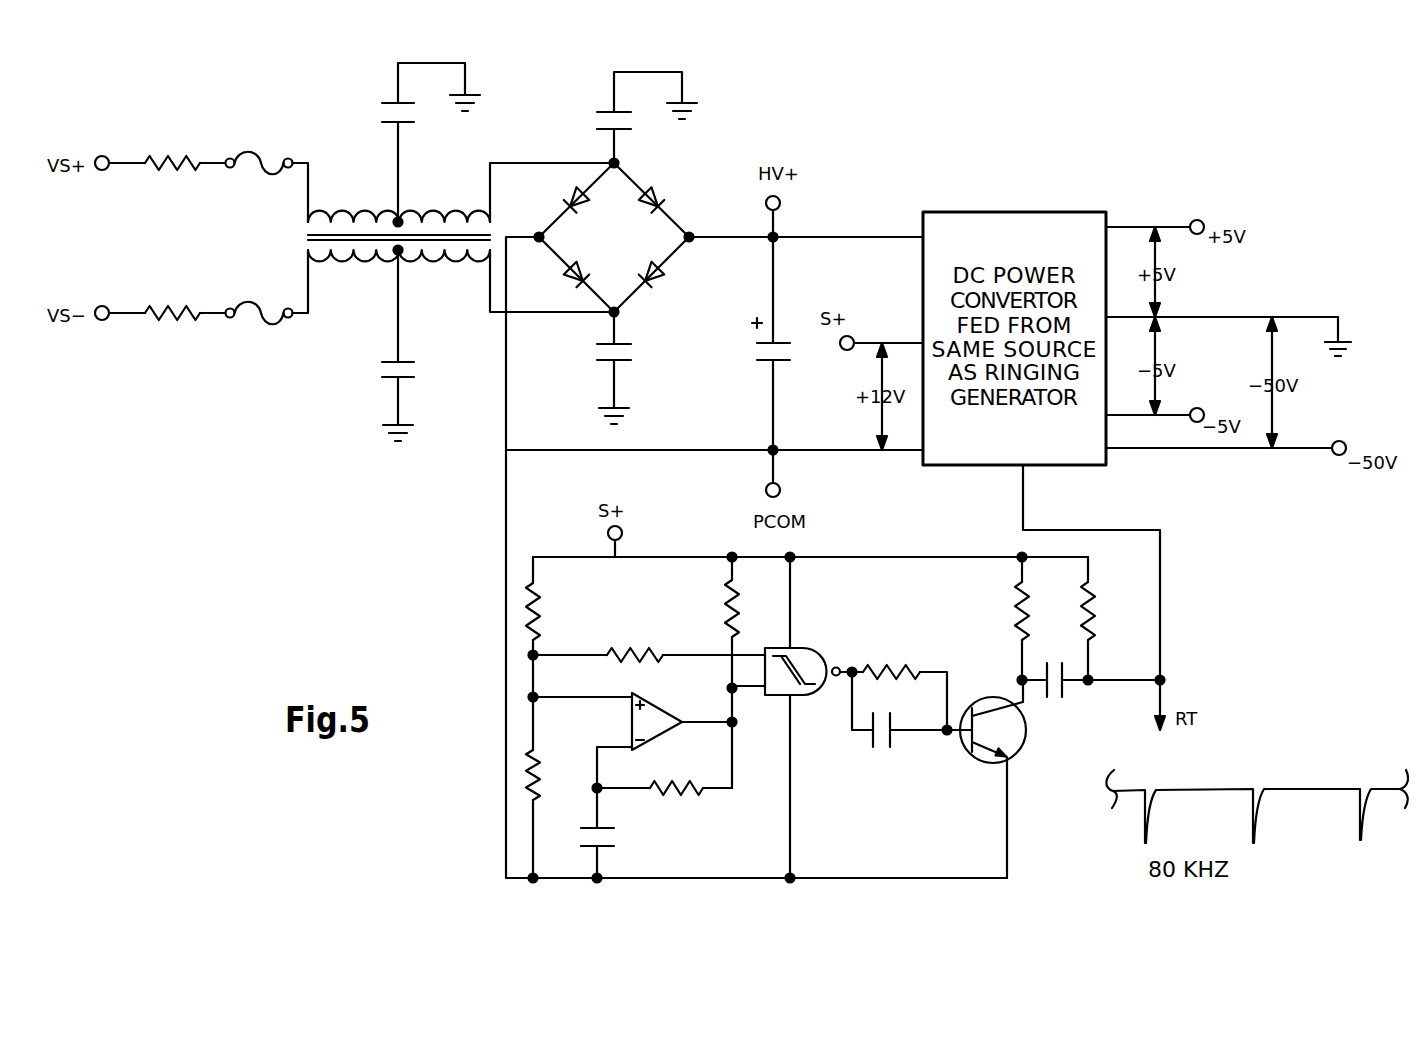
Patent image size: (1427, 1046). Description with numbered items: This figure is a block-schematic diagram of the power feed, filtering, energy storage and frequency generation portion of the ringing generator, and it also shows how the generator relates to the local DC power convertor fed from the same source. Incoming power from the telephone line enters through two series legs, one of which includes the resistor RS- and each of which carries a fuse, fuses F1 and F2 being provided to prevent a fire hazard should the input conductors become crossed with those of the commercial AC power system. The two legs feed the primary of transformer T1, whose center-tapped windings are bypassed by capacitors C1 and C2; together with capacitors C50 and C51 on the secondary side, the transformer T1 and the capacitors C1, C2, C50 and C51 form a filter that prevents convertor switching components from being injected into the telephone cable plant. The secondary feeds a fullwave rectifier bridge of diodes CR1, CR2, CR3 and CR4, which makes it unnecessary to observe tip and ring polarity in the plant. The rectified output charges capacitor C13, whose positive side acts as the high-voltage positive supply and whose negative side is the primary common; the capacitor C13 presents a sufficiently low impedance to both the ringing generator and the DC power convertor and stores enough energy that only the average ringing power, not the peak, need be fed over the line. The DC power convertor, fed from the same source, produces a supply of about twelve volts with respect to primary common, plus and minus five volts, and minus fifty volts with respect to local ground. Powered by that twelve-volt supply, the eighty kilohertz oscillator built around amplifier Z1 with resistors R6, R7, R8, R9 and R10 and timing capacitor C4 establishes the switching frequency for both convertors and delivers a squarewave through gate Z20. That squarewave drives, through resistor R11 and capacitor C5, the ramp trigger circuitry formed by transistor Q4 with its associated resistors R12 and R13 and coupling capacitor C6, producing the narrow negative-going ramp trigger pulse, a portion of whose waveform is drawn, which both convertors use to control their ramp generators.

The fuse F1 is at (267, 172).
The series resistor negative input RS- is at (185, 297).
The fuse F2 is at (267, 287).
The transformer T1 is at (445, 237).
The capacitor C1 is at (414, 142).
The capacitor C2 is at (379, 345).
The diode CR1 is at (551, 196).
The diode CR2 is at (674, 193).
The diode CR3 is at (558, 283).
The diode CR4 is at (674, 280).
The capacitor C50 is at (622, 117).
The capacitor C51 is at (597, 368).
The capacitor C13 is at (748, 343).
The resistor R8 is at (551, 606).
The resistor R7 is at (649, 642).
The resistor R9 is at (551, 787).
The operational amplifier Z1 is at (664, 733).
The resistor R10 is at (664, 802).
The capacitor C4 is at (616, 833).
The resistor R6 is at (713, 672).
The gate Z20 is at (808, 661).
The resistor R11 is at (899, 686).
The capacitor C5 is at (899, 729).
The transistor Q4 is at (1000, 779).
The resistor R12 is at (994, 618).
The resistor R13 is at (1109, 618).
The capacitor C6 is at (1091, 666).